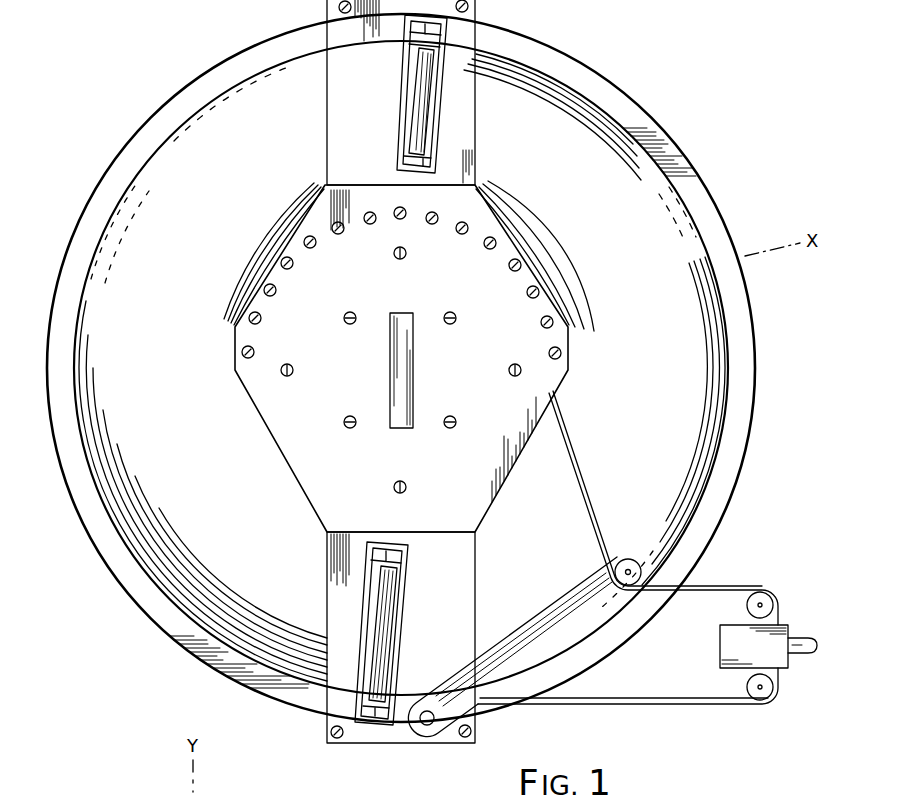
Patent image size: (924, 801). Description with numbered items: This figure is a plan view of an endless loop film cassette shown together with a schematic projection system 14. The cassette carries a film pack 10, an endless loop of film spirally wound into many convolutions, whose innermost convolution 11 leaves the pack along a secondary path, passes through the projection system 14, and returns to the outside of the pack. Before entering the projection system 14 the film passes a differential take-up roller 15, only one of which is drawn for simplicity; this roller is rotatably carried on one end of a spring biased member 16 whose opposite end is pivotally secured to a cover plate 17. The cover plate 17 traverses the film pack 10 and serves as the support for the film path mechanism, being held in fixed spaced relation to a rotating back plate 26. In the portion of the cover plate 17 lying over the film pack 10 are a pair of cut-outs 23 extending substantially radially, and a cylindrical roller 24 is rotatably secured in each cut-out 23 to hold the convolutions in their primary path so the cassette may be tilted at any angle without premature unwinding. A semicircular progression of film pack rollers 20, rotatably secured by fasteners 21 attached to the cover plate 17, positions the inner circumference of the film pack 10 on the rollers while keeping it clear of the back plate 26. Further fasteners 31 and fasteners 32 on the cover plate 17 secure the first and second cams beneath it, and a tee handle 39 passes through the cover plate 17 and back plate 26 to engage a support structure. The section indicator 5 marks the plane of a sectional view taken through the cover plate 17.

The section line 5- 5 is at (402, 203).
The film pack 10 is at (201, 514).
The innermost convolution 11 is at (577, 447).
The projection system 14 is at (785, 583).
The differential take-up rollers 15 is at (621, 556).
The spring biased member 16 is at (553, 598).
The cover plate 17 is at (360, 487).
The film pack rollers 20 is at (254, 278).
The fasteners 21 is at (332, 263).
The cut-outs 23 is at (405, 78).
The cylindrical roller 24 is at (396, 140).
The rotating back plate 26 is at (637, 100).
The fasteners 31 is at (456, 319).
The fasteners 32 is at (406, 252).
The tee handle 39 is at (414, 365).